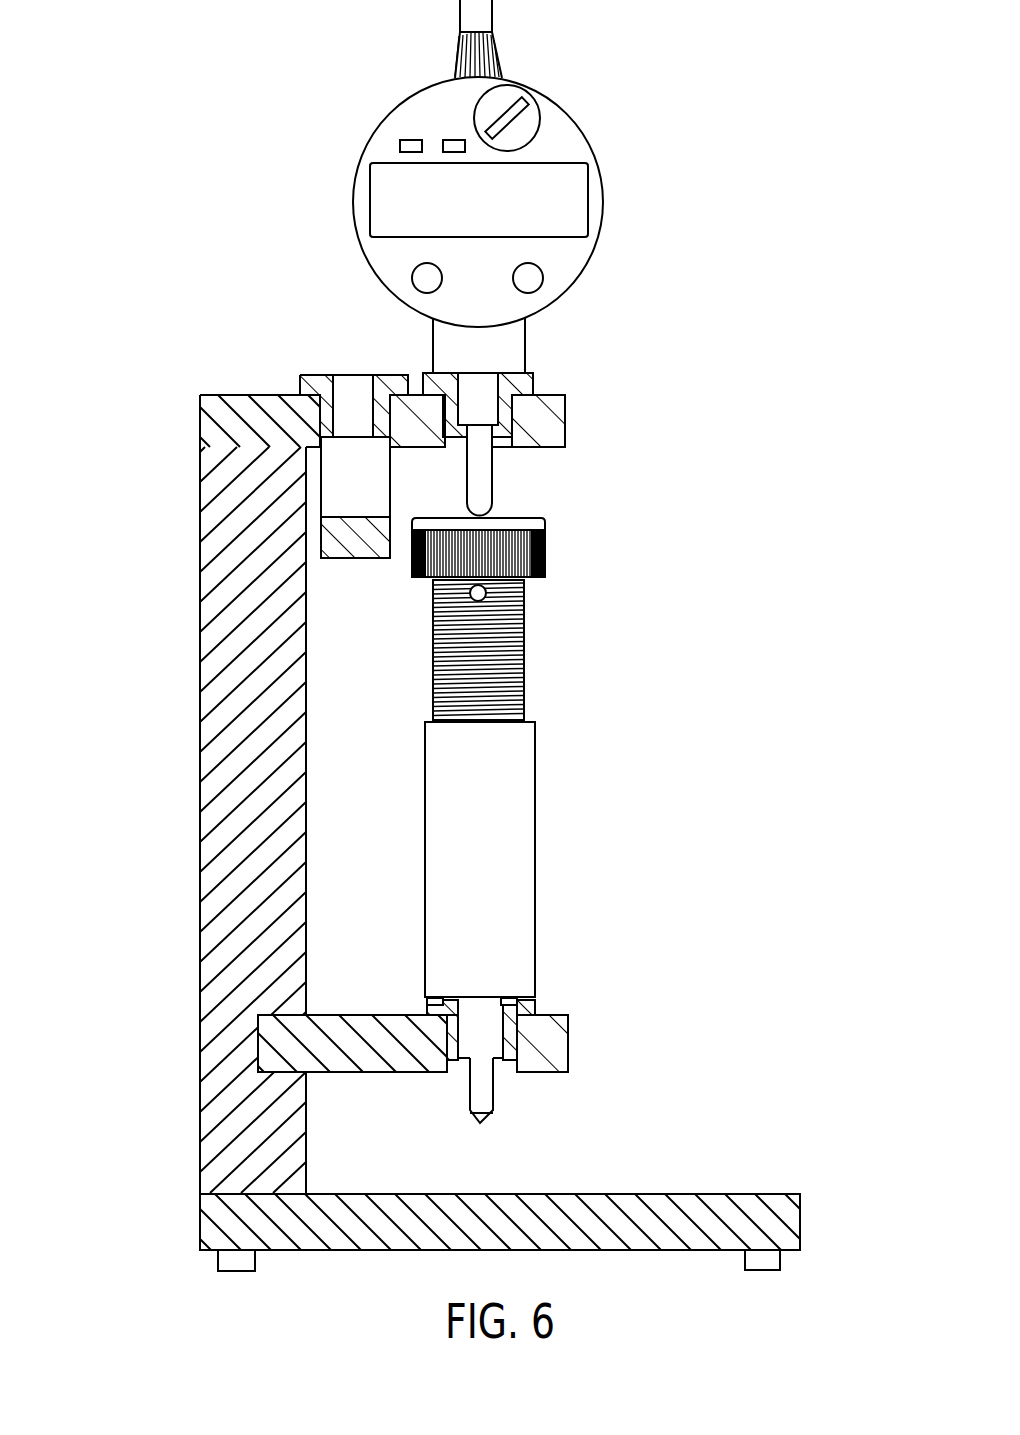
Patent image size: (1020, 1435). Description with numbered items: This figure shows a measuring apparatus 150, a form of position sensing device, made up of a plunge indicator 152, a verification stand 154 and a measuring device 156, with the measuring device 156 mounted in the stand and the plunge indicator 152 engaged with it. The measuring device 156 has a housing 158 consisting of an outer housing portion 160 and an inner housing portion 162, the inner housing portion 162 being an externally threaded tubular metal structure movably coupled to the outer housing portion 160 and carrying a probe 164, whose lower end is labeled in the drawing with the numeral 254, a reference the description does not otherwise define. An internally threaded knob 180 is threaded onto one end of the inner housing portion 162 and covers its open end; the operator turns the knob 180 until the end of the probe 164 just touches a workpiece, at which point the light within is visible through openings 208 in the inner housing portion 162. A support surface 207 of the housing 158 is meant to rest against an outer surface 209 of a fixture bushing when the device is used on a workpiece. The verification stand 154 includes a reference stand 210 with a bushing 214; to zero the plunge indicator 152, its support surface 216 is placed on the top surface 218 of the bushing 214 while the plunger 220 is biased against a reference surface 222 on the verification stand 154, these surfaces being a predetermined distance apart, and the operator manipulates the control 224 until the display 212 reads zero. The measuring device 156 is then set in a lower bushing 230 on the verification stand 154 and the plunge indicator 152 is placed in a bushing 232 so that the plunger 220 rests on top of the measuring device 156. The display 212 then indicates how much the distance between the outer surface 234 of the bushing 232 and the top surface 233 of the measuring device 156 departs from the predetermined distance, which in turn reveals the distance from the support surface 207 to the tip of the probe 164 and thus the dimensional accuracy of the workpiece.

The measuring apparatus 150 is at (438, 833).
The plunge indicator 152 is at (528, 186).
The verification stand 154 is at (205, 696).
The measuring device 156 is at (530, 836).
The housing 158 is at (530, 744).
The outer housing portion 160 is at (523, 923).
The inner housing portion 162 is at (515, 653).
The probe 164 is at (482, 1126).
The knob 180 is at (520, 551).
The support surface 207 is at (430, 1000).
The openings 208 is at (488, 596).
The outer surface 209 is at (515, 996).
The reference stand 210 is at (418, 430).
The display 212 is at (570, 183).
The bushing 214 is at (293, 388).
The support surface 216 is at (512, 386).
The top surface 218 is at (323, 372).
The plunger 220 is at (485, 481).
The reference surface 222 is at (350, 515).
The control 224 is at (507, 52).
The lower bushing 230 is at (528, 1006).
The bushing 232 is at (505, 412).
The top surface 233 is at (515, 516).
The outer surface 234 is at (436, 372).
The tip end 254 is at (478, 1126).